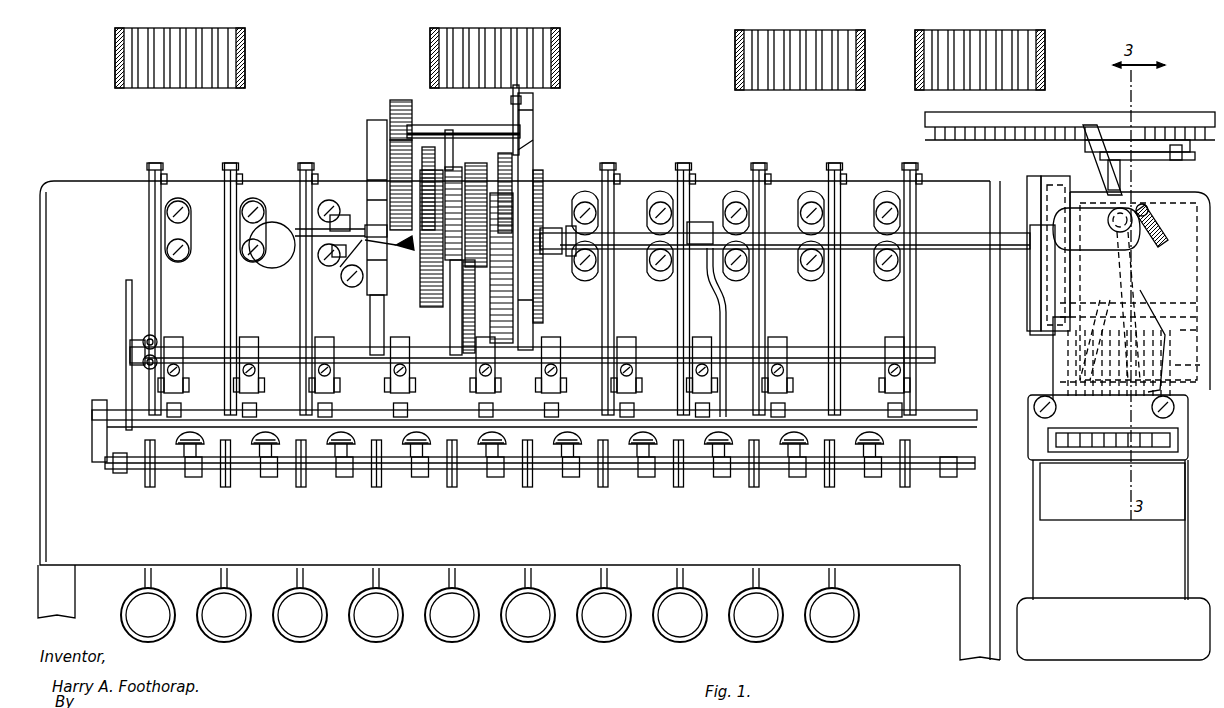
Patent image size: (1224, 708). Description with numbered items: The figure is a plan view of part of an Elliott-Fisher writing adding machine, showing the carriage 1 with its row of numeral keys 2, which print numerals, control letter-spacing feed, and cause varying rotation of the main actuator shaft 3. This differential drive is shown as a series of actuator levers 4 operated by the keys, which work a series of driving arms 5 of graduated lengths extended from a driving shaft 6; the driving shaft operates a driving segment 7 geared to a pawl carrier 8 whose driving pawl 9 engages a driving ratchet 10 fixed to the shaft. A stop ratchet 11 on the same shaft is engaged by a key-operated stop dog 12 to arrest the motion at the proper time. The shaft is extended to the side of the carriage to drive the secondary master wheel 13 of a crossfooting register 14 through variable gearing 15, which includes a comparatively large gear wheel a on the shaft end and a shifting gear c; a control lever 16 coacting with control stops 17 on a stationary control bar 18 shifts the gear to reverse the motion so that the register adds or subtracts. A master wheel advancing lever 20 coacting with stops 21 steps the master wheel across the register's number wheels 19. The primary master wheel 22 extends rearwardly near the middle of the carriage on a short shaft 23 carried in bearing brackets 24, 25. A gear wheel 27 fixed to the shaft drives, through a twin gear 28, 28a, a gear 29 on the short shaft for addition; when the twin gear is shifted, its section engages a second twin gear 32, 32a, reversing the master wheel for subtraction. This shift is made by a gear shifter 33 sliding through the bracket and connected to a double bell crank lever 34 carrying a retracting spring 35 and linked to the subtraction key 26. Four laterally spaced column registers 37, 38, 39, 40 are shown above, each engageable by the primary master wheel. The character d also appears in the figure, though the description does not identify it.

The carriage 1 is at (81, 187).
The numeral keys 2 is at (370, 641).
The main actuator shaft 3 is at (776, 240).
The actuator levers 4 is at (160, 310).
The driving arms 5 is at (127, 317).
The driving shaft 6 is at (180, 470).
The driving segment 7 is at (468, 316).
The pawl carrier 8 is at (455, 175).
The driving pawl 9 is at (478, 206).
The driving ratchet 10 is at (482, 228).
The stop ratchet 11 is at (506, 176).
The stop dog 12 is at (508, 300).
The master wheel 13 is at (1143, 262).
The crossfooting register 14 is at (1110, 530).
The variable gearing 15 is at (1065, 297).
The control lever 16 is at (1160, 152).
The control stops 17 is at (1140, 148).
The control bar 18 is at (1016, 140).
The number wheels 19 is at (1097, 320).
The master wheel advancing lever 20 is at (1122, 175).
The stops 21 is at (1100, 130).
The primary master wheel 22 is at (512, 102).
The short shaft 23 is at (455, 130).
The bearing bracket 24 is at (370, 122).
The bearing bracket 25 is at (536, 120).
The subtraction key 26 is at (272, 222).
The gear wheel 27 is at (428, 290).
The twin gear section 28 is at (430, 147).
The twin gear section 28a is at (372, 165).
The gear 29 is at (402, 102).
The twin gear section 32 is at (358, 271).
The twin gear section 32a is at (362, 275).
The gear shifter 33 is at (338, 205).
The double bell crank lever 34 is at (331, 262).
The retracting spring 35 is at (407, 250).
The column register 37 is at (180, 46).
The column register 38 is at (495, 46).
The column register 39 is at (800, 48).
The column register 40 is at (980, 48).
The gear wheel a is at (1052, 200).
The shifting gear c is at (1040, 272).
The comb d is at (1030, 374).